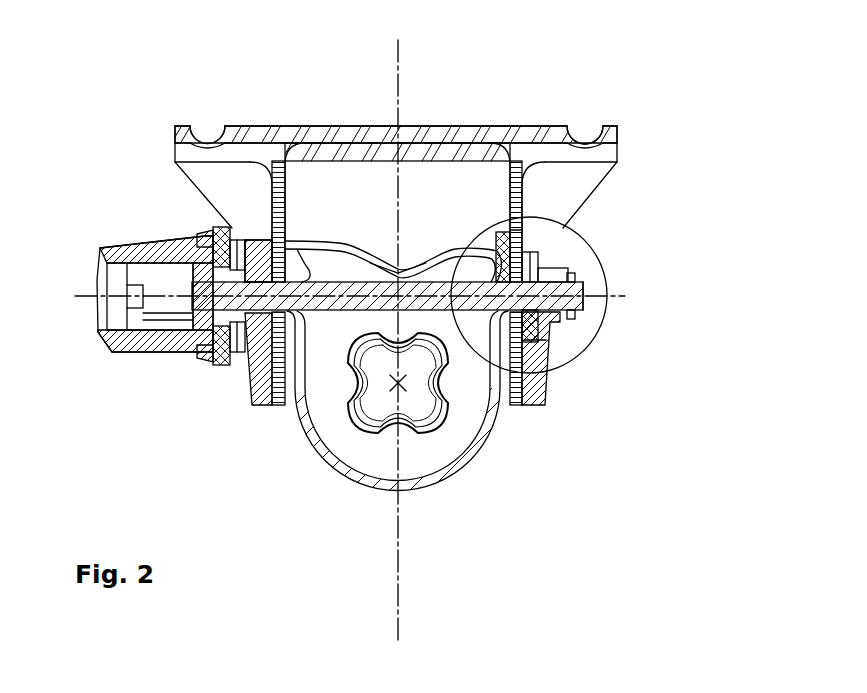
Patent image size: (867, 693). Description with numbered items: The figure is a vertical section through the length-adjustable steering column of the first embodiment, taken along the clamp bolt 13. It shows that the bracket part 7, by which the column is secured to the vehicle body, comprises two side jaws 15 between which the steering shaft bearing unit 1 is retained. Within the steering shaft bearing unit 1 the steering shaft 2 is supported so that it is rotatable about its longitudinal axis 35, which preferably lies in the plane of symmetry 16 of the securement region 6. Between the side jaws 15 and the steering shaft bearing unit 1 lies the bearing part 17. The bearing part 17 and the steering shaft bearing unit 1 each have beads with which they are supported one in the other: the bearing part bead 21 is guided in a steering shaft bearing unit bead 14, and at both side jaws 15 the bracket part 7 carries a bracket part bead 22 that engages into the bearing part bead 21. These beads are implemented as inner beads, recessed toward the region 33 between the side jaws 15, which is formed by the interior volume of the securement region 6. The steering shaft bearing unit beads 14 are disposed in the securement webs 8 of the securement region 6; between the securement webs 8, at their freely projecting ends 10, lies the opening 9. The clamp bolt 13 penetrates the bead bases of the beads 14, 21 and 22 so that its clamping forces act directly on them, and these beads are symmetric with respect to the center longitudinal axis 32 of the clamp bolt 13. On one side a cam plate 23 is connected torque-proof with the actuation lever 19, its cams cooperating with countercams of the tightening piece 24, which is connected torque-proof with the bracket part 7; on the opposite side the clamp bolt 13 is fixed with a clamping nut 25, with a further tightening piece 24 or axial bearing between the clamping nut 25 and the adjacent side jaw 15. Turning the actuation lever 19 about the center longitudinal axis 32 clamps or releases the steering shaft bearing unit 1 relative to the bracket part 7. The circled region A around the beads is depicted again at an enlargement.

The steering shaft bearing unit 1 is at (311, 452).
The steering shaft 2 is at (465, 462).
The securement region 6 is at (442, 486).
The bracket part 7 is at (408, 262).
The securement webs 8 is at (277, 373).
The opening 9 is at (516, 170).
The freely projecting ends 10 is at (514, 236).
The clamp bolt 13 is at (556, 322).
The steering shaft bearing unit bead 14 is at (314, 316).
The side jaws 15 is at (270, 195).
The plane of symmetry 16 is at (398, 100).
The bearing part 17 is at (272, 197).
The actuation lever 19 is at (122, 345).
The bearing part bead 21 is at (222, 248).
The bracket part bead 22 is at (243, 352).
The cam plate 23 is at (222, 362).
The tightening piece 24 is at (205, 350).
The clamping nut 25 is at (578, 276).
The center longitudinal axis 32 is at (100, 296).
The region 33 is at (352, 272).
The longitudinal axis 35 is at (450, 405).
The region A is at (600, 320).